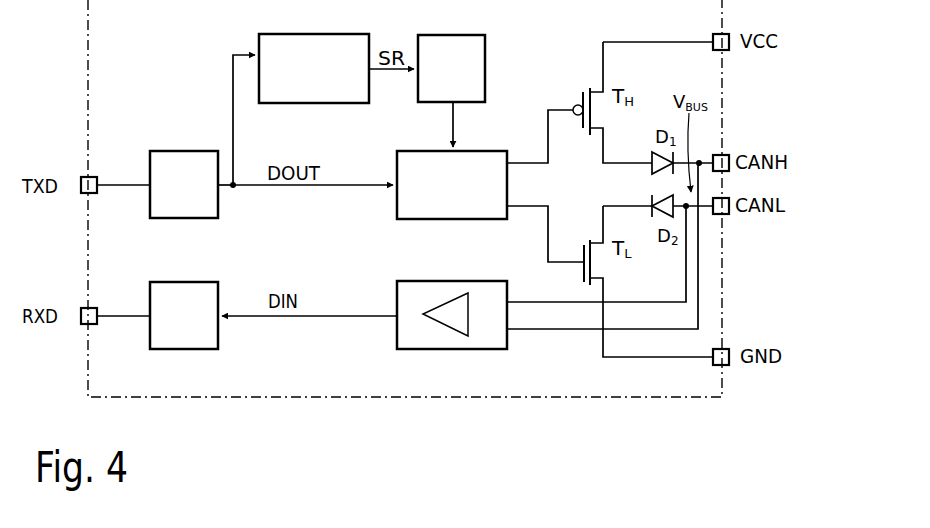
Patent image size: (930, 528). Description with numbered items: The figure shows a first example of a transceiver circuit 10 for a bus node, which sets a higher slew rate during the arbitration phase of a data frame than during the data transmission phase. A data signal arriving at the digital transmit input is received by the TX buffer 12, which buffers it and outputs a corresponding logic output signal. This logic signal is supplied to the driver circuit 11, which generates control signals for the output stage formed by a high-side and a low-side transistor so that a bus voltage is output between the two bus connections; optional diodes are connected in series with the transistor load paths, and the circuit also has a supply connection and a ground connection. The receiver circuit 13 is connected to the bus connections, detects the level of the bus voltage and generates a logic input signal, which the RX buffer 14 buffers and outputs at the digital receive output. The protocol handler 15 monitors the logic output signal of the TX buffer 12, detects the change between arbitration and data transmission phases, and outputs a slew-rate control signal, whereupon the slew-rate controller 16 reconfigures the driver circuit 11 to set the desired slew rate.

The transceiver circuit 10 is at (403, 211).
The driver circuit 11 is at (452, 220).
The TX buffer 12 is at (190, 218).
The receiver circuit 13 is at (437, 280).
The RX buffer 14 is at (173, 281).
The protocol handler 15 is at (308, 104).
The slew-rate controller 16 is at (486, 70).